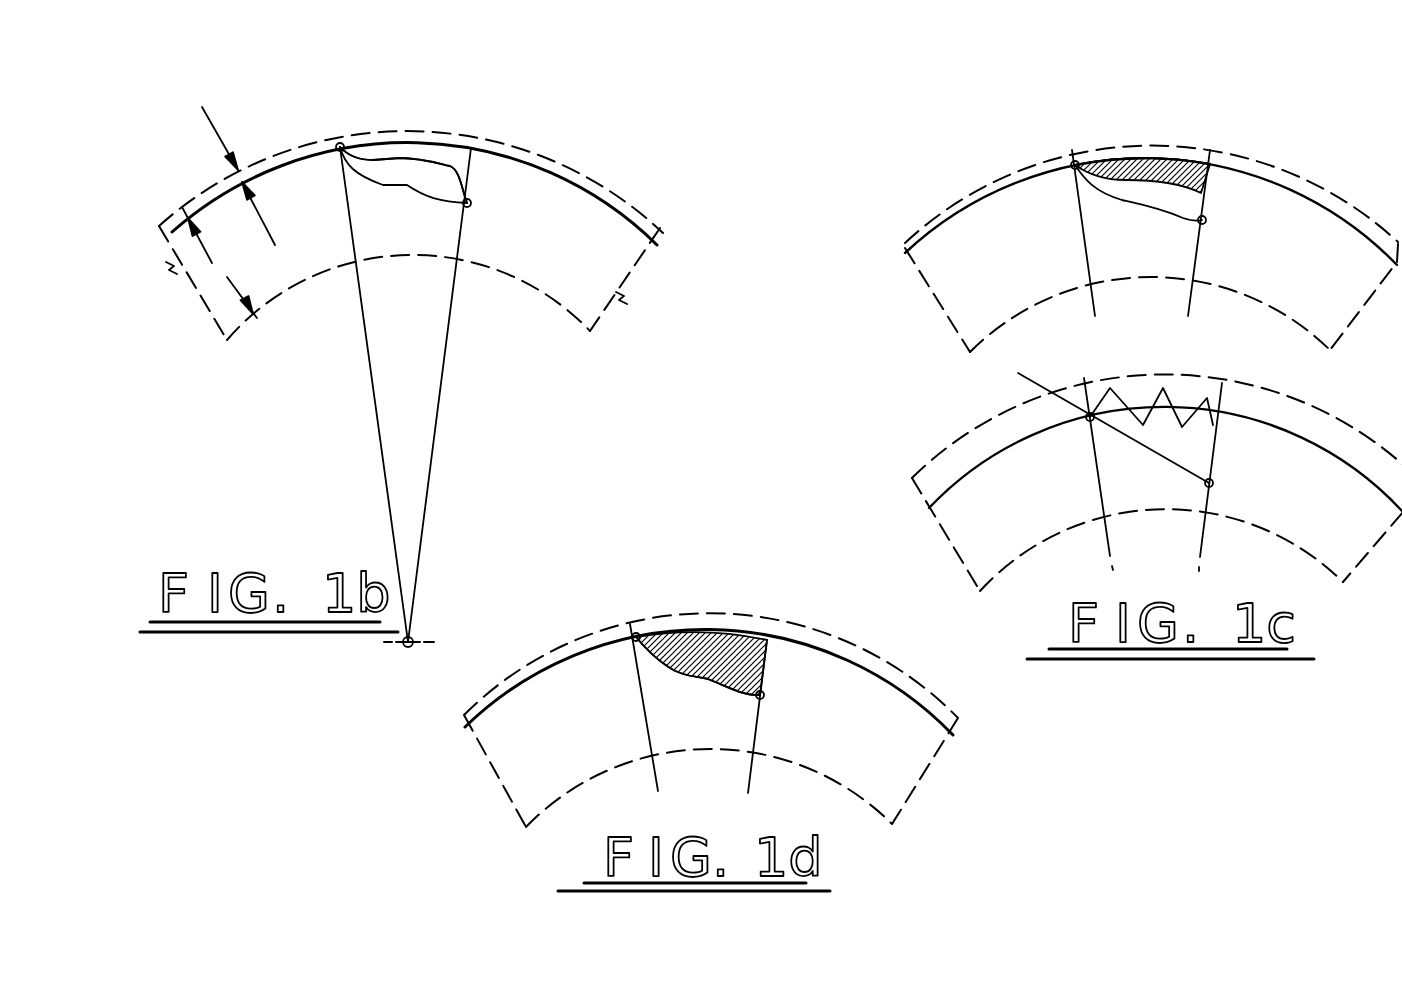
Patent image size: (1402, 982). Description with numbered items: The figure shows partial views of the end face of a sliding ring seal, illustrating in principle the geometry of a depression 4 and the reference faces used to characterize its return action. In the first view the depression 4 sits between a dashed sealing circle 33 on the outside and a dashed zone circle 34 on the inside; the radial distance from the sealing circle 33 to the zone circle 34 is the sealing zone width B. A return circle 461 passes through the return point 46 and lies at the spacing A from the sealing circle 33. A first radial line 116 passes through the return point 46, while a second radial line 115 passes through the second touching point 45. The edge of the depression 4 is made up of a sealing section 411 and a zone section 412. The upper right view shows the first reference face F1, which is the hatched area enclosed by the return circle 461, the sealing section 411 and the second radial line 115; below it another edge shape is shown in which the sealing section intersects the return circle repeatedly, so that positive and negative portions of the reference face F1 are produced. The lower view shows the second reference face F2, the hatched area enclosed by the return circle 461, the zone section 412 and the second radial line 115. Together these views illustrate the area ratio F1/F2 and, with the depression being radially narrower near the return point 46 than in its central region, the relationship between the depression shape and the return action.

In FIG. 1b, the depression 4 is at (372, 167).
In FIG. 1b, the sealing circle 33 is at (583, 175).
In FIG. 1c, the sealing circle 33 is at (1349, 433).
In FIG. 1b, the zone circle 34 is at (523, 288).
In FIG. 1b, the second touching point 45 is at (468, 204).
In FIG. 1c, the second touching point 45 is at (1205, 219).
In FIG. 1d, the second touching point 45 is at (762, 693).
In FIG. 1b, the return point 46 is at (337, 150).
In FIG. 1c, the return point 46 is at (1075, 165).
In FIG. 1d, the return point 46 is at (633, 637).
In FIG. 1b, the sealing section 411 is at (408, 160).
In FIG. 1c, the sealing section 411 is at (1188, 158).
In FIG. 1b, the zone section 412 is at (413, 183).
In FIG. 1c, the zone section 412 is at (1138, 193).
In FIG. 1d, the zone section 412 is at (691, 676).
In FIG. 1b, the return circle 461 is at (620, 217).
In FIG. 1c, the return circle 461 is at (1010, 182).
In FIG. 1d, the return circle 461 is at (565, 659).
In FIG. 1b, the second radial line 115 is at (441, 393).
In FIG. 1c, the second radial line 115 is at (1198, 243).
In FIG. 1d, the second radial line 115 is at (755, 732).
In FIG. 1b, the first radial line 116 is at (347, 394).
In FIG. 1c, the first radial line 116 is at (1085, 243).
In FIG. 1d, the first radial line 116 is at (638, 683).
In FIG. 1b, the spacing A is at (238, 172).
In FIG. 1b, the sealing zone width B is at (219, 262).
In FIG. 1c, the first reference face F1 is at (1148, 158).
In FIG. 1d, the second reference face F2 is at (728, 625).